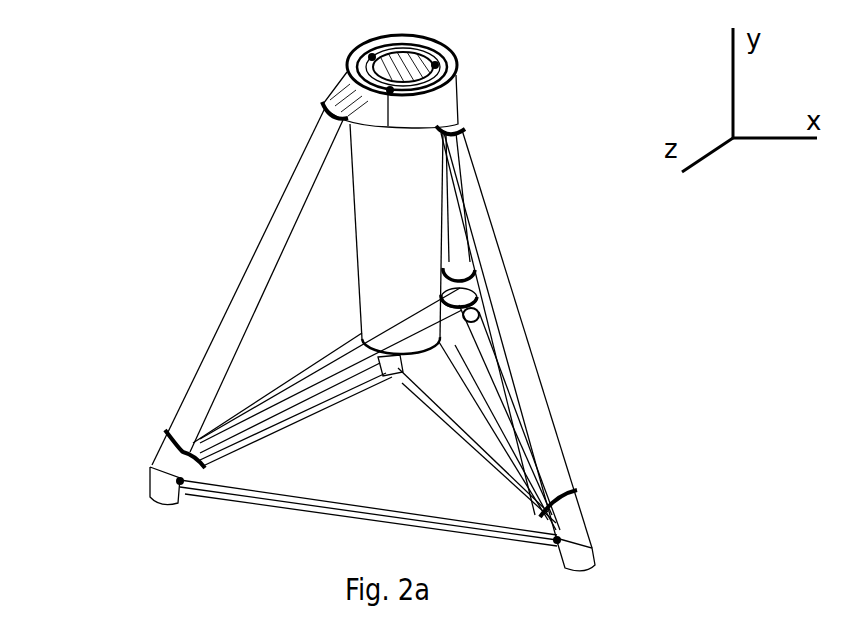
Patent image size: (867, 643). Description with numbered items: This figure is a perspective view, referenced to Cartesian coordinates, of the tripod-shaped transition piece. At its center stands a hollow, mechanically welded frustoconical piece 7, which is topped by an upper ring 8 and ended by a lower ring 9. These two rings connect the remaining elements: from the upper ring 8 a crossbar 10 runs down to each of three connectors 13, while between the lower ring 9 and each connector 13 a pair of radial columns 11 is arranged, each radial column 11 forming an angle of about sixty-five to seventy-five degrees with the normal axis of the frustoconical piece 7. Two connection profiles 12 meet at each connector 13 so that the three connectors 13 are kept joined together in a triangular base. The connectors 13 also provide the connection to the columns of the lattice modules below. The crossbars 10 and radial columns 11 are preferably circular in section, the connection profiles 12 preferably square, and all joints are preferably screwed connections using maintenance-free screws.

The central frustoconical piece 7 is at (405, 232).
The upper ring 8 is at (350, 96).
The lower ring 9 is at (435, 347).
The crossbar 10 is at (265, 262).
The radial column 11 is at (480, 448).
The connection profile 12 is at (260, 500).
The connector 13 is at (150, 467).